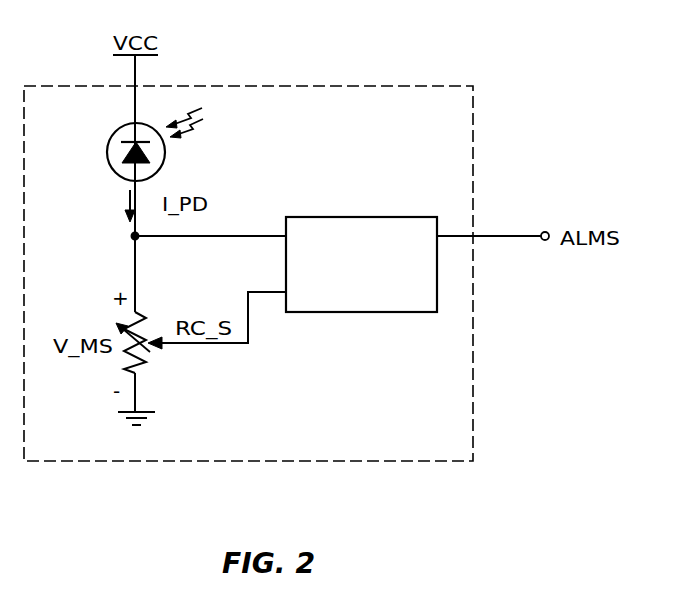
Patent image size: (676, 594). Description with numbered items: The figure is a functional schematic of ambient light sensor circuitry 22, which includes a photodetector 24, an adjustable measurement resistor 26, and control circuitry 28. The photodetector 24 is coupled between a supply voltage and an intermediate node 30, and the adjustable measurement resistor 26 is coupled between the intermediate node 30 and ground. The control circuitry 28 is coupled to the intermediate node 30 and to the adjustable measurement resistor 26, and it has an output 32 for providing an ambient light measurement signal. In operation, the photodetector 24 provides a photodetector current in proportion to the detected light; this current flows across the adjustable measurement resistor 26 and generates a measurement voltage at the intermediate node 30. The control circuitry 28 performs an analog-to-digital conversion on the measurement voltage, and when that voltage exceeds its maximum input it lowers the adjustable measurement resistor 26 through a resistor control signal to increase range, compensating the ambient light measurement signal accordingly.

The ambient light sensor circuitry 22 is at (448, 447).
The photodetector 24 is at (112, 137).
The adjustable measurement resistor 26 is at (148, 362).
The control circuitry 28 is at (373, 290).
The intermediate node 30 is at (133, 237).
The output 32 is at (548, 231).